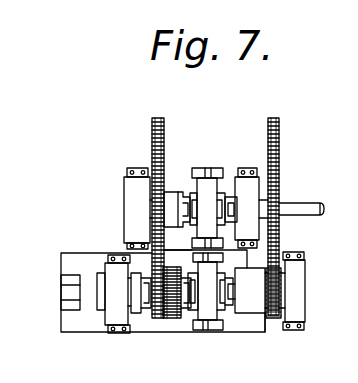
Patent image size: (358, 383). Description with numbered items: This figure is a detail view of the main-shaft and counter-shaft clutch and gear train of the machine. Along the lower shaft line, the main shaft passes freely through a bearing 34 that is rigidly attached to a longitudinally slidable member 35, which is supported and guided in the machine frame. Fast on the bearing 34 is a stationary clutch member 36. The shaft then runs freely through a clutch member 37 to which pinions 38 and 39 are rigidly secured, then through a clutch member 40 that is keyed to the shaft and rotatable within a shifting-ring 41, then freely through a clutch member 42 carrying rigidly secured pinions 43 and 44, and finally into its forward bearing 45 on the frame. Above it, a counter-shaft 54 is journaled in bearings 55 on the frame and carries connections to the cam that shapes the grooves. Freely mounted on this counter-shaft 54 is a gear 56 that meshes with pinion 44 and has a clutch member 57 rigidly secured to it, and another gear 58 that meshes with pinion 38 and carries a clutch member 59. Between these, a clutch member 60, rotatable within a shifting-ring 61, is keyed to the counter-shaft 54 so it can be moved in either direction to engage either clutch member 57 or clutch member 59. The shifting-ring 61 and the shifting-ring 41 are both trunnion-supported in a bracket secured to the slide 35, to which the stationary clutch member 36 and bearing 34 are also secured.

The bearing 34 is at (115, 256).
The longitudinally slidable member 35 is at (190, 324).
The stationary clutch member 36 is at (77, 310).
The clutch member 37 is at (138, 311).
The pinion 38 is at (158, 313).
The pinion 39 is at (169, 262).
The clutch member 40 is at (148, 277).
The shifting-ring 41 is at (209, 318).
The clutch member 42 is at (230, 276).
The pinion 43 is at (257, 320).
The pinion 44 is at (276, 319).
The forward bearing 45 is at (300, 287).
The counter-shaft 54 is at (306, 205).
The bearings 55 is at (126, 209).
The gear 56 is at (281, 157).
The clutch member 57 is at (251, 208).
The gear 58 is at (162, 150).
The clutch member 59 is at (170, 190).
The clutch member 60 is at (191, 175).
The shifting-ring 61 is at (212, 182).